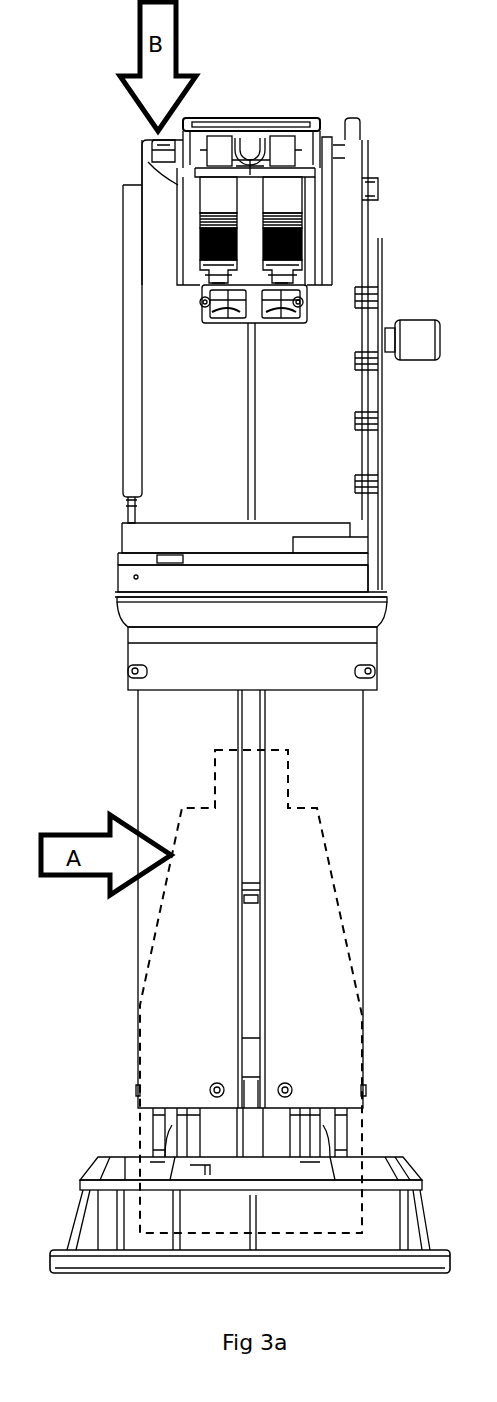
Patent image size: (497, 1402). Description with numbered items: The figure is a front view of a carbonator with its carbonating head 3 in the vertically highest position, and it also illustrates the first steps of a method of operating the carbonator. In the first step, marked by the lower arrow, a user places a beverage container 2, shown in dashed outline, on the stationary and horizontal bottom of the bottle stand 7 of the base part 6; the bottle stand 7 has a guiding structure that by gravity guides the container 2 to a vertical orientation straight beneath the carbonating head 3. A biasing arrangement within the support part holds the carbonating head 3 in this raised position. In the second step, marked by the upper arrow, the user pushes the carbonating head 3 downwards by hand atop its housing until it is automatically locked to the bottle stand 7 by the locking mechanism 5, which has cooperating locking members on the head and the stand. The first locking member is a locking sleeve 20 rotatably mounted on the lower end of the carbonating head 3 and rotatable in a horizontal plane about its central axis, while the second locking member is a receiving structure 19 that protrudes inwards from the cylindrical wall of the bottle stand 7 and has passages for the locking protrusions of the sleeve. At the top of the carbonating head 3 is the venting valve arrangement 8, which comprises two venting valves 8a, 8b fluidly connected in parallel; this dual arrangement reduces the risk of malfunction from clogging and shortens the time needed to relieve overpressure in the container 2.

The beverage container 2 is at (332, 865).
The carbonating head 3 is at (185, 420).
The locking mechanism 5 is at (408, 694).
The base part 6 is at (348, 1258).
The bottle stand 7 is at (260, 1173).
The venting valve arrangement 8 is at (307, 214).
The venting valve 8a is at (218, 190).
The venting valve 8b is at (303, 240).
The receiving structure 19 is at (388, 1173).
The locking sleeve 20 is at (357, 653).